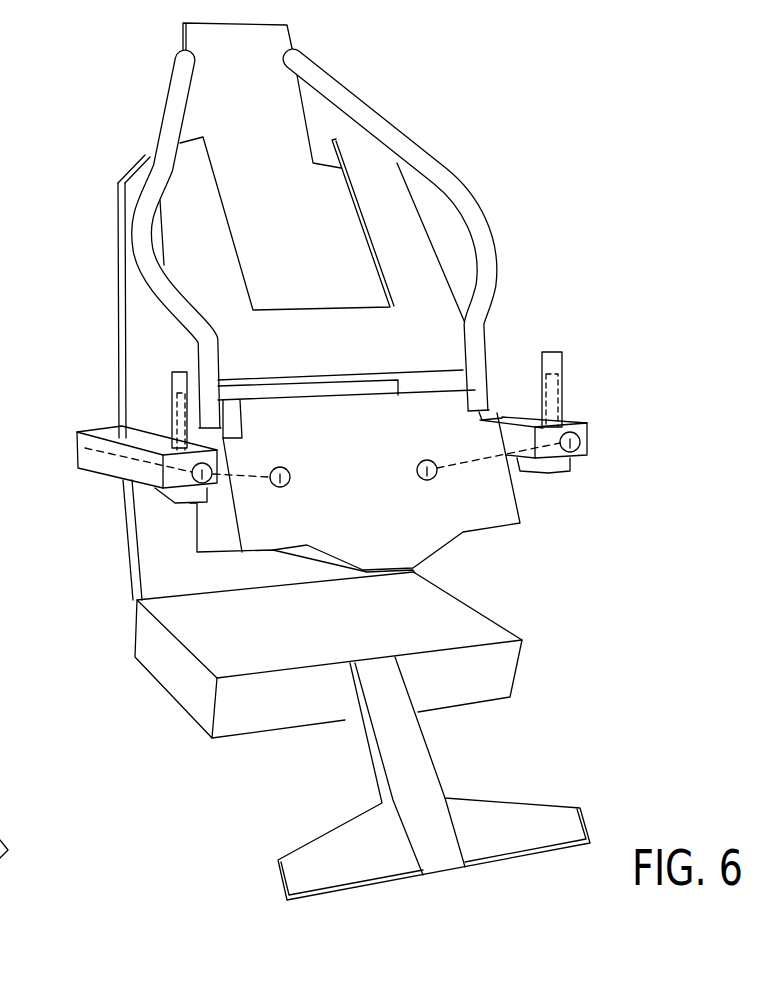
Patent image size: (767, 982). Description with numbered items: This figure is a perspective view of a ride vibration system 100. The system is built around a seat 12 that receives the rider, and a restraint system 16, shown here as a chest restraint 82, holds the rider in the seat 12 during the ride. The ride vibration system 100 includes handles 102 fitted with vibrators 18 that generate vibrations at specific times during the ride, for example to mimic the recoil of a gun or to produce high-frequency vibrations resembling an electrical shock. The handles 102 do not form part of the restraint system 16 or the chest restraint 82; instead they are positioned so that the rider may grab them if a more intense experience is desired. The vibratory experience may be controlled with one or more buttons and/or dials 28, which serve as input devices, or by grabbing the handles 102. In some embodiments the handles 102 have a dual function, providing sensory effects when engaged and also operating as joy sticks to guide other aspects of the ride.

The seat 12 is at (229, 811).
The restraint system 16 is at (528, 228).
The vibrators 18 is at (172, 413).
The buttons and/or dials 28 is at (205, 480).
The chest restraint 82 is at (198, 245).
The ride vibration system 100 is at (107, 674).
The handles 102 is at (60, 538).